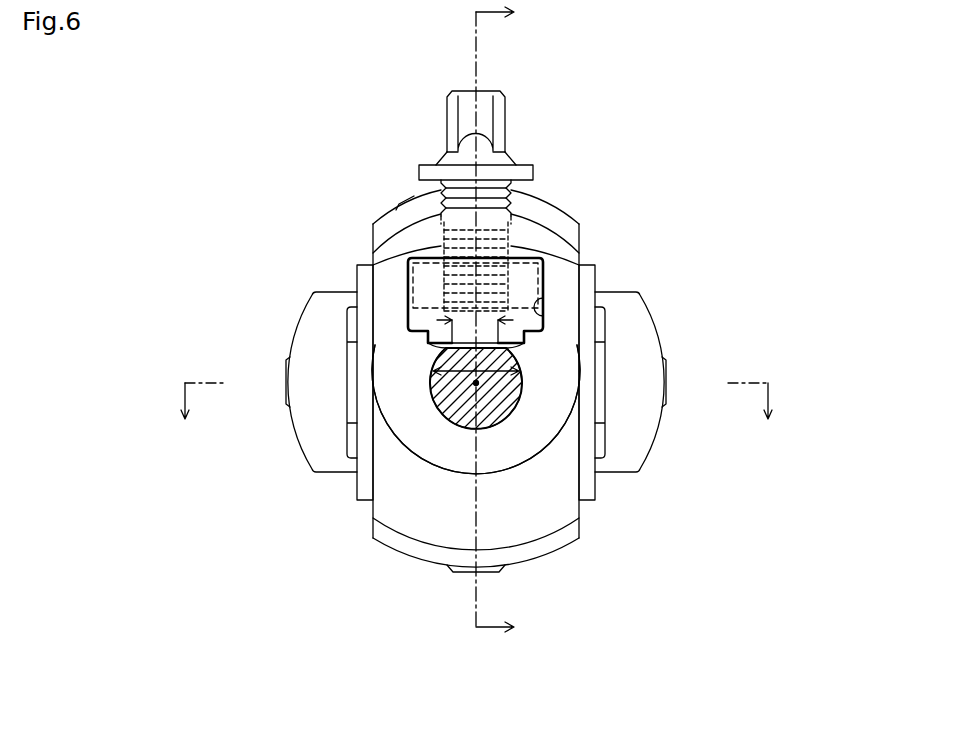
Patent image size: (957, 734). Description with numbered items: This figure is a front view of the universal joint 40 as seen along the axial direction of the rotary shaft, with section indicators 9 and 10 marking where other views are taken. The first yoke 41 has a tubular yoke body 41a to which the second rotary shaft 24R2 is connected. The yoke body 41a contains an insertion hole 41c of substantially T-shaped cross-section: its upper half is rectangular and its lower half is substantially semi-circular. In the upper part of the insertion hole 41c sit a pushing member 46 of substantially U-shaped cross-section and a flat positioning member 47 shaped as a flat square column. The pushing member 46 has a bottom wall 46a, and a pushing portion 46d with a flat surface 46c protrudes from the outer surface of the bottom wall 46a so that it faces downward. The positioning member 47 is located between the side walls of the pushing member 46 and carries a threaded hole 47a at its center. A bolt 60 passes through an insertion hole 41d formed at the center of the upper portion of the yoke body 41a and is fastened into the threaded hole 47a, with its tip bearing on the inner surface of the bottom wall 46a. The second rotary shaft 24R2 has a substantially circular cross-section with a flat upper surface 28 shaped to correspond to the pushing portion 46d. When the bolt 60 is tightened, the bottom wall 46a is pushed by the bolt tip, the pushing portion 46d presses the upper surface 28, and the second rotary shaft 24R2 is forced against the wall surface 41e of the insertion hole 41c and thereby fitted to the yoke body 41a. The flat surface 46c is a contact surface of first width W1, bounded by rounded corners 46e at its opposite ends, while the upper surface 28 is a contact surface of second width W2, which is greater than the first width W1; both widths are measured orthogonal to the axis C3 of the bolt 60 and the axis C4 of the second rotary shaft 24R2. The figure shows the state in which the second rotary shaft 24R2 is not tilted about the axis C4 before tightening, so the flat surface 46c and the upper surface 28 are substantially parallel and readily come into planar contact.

The section line IX 9 is at (507, 331).
The section line X 10 is at (477, 418).
The axis of the bolt C3 is at (480, 76).
The axis of the second rotary shaft C4 is at (479, 388).
The first width W1 is at (484, 320).
The second width W2 is at (446, 378).
The second rotary shaft 24R2 is at (517, 405).
The upper surface 28 is at (515, 368).
The joint assembly 40 is at (628, 128).
The first yoke 41 is at (579, 223).
The yoke body 41a is at (579, 276).
The insertion hole 41c is at (546, 293).
The insertion hole 41d is at (415, 199).
The wall surface 41e is at (528, 430).
The pushing member 46 is at (408, 350).
The bottom wall 46a is at (416, 322).
The flat surface 46c is at (445, 350).
The pushing portion 46d is at (442, 383).
The rounded corners 46e is at (432, 362).
The positioning member 47 is at (403, 283).
The threaded hole 47a is at (440, 251).
The bolt 60 is at (505, 112).